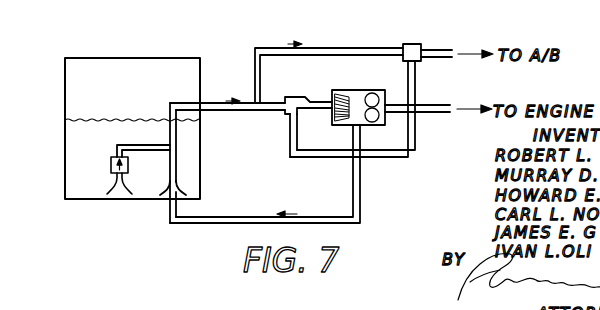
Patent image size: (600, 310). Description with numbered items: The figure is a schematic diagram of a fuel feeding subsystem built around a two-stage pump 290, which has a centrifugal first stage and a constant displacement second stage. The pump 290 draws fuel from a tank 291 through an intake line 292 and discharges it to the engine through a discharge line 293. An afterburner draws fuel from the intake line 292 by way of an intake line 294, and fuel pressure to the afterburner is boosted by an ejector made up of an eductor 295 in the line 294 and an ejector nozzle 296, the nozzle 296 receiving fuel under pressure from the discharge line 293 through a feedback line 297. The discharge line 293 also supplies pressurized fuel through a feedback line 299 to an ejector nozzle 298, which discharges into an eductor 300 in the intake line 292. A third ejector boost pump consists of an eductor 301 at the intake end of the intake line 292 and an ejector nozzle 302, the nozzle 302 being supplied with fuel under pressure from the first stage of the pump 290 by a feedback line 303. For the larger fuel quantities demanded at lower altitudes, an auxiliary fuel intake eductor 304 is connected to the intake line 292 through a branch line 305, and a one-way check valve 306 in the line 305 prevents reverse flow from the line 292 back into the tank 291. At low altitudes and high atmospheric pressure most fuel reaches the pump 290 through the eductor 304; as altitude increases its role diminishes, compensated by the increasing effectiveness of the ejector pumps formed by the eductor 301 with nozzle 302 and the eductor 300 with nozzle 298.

The two-stage pump 290 is at (356, 90).
The tank 291 is at (189, 150).
The intake line 292 is at (205, 102).
The discharge line 293 is at (430, 105).
The intake line 294 is at (325, 47).
The eductor 295 is at (417, 45).
The ejector nozzle 296 is at (425, 50).
The feedback line 297 is at (419, 70).
The ejector nozzle 298 is at (298, 113).
The feedback line 299 is at (416, 136).
The eductor 300 is at (293, 97).
The eductor 301 is at (176, 187).
The ejector nozzle 302 is at (175, 197).
The return conduit 303 is at (367, 195).
The auxiliary fuel intake eductor 304 is at (104, 189).
The branch line 305 is at (145, 145).
The one-way check valve 306 is at (110, 158).